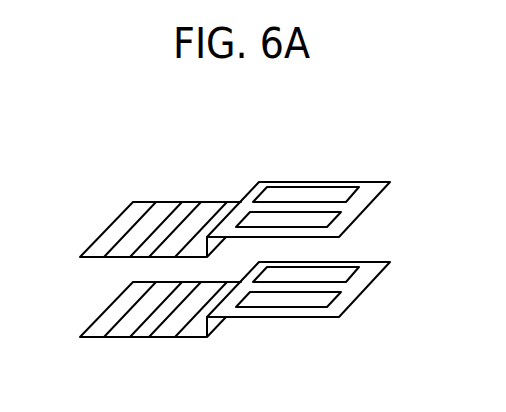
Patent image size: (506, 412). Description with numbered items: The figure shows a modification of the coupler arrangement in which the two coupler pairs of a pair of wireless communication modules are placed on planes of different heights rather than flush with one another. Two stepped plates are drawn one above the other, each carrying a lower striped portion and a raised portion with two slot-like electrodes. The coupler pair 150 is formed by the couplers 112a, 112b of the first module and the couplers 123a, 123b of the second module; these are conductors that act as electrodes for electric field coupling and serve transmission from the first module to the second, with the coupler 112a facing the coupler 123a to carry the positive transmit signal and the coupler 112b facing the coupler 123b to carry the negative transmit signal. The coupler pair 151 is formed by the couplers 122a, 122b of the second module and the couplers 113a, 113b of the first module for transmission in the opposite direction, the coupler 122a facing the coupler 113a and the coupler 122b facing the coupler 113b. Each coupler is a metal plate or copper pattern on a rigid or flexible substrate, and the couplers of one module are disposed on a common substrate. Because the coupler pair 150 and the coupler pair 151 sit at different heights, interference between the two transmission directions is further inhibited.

The coupler pair 150 is at (208, 243).
The coupler pair 151 is at (278, 285).
The coupler 123a is at (163, 202).
The coupler 123b is at (215, 202).
The coupler 122a is at (330, 222).
The coupler 122b is at (318, 193).
The coupler 112a is at (118, 340).
The coupler 112b is at (165, 340).
The coupler 113a is at (310, 305).
The coupler 113b is at (357, 275).